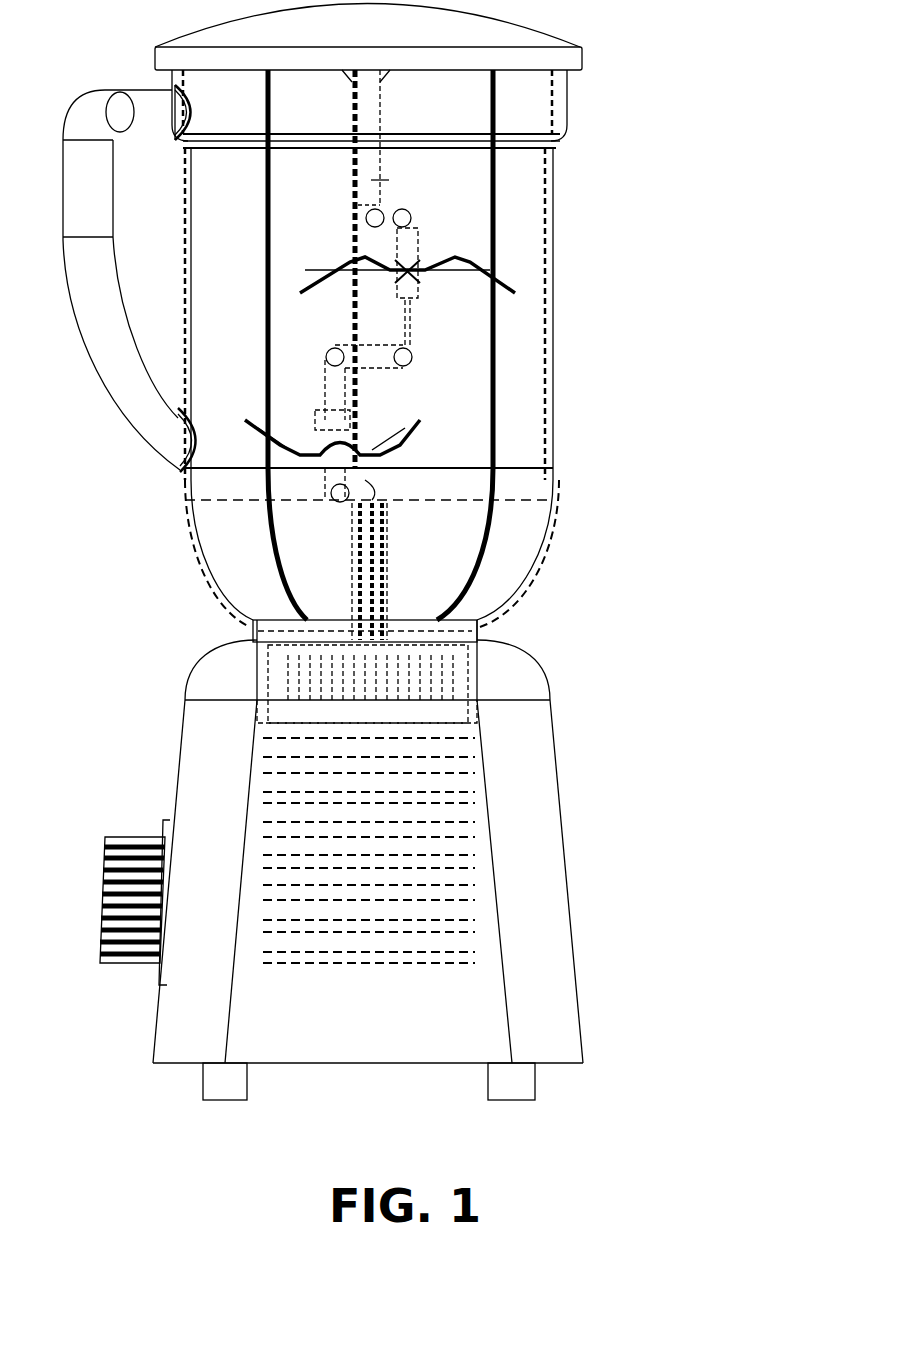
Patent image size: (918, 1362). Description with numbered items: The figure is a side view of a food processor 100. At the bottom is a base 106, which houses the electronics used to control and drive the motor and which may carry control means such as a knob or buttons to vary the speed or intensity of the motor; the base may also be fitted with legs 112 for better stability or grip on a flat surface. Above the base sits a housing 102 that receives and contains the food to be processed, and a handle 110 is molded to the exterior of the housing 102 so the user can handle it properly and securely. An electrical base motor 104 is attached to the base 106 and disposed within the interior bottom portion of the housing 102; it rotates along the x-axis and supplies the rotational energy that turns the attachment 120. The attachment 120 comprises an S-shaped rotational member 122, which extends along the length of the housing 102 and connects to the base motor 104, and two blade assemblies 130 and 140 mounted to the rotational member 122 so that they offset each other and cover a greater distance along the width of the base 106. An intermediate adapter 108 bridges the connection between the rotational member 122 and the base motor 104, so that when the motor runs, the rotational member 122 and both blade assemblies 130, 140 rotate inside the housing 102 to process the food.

The food processor 100 is at (584, 495).
The housing 102 is at (222, 231).
The base motor 104 is at (515, 640).
The bottom base 106 is at (356, 1028).
The intermediate adapter 108 is at (356, 41).
The handle 110 is at (79, 218).
The legs 112 is at (212, 1078).
The attachment 120 is at (363, 401).
The S-shaped rotational member 122 is at (382, 269).
The blade assembly 130 is at (390, 455).
The blade assembly 140 is at (402, 251).